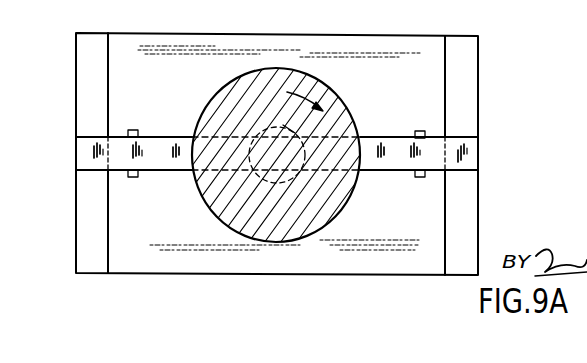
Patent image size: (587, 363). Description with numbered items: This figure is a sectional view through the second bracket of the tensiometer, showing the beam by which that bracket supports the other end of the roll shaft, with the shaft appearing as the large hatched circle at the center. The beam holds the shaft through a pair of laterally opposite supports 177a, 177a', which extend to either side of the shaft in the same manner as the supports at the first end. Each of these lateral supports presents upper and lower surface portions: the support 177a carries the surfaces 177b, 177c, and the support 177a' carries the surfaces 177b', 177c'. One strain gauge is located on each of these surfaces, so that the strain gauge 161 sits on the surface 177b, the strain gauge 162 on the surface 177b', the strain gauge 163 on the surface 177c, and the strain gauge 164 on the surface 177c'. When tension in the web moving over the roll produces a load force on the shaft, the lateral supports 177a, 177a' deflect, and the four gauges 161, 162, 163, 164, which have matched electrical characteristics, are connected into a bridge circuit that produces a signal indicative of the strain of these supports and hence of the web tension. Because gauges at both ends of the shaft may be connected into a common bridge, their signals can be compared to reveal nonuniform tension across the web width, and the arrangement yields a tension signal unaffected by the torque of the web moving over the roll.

The strain gauge 161 is at (419, 132).
The strain gauge 162 is at (131, 129).
The strain gauge 163 is at (420, 177).
The strain gauge 164 is at (134, 177).
The lateral support 177a is at (496, 153).
The surface 177b is at (378, 108).
The surface 177c is at (392, 185).
The lateral support 177a' is at (128, 179).
The surface 177b' is at (201, 104).
The surface 177c' is at (168, 193).